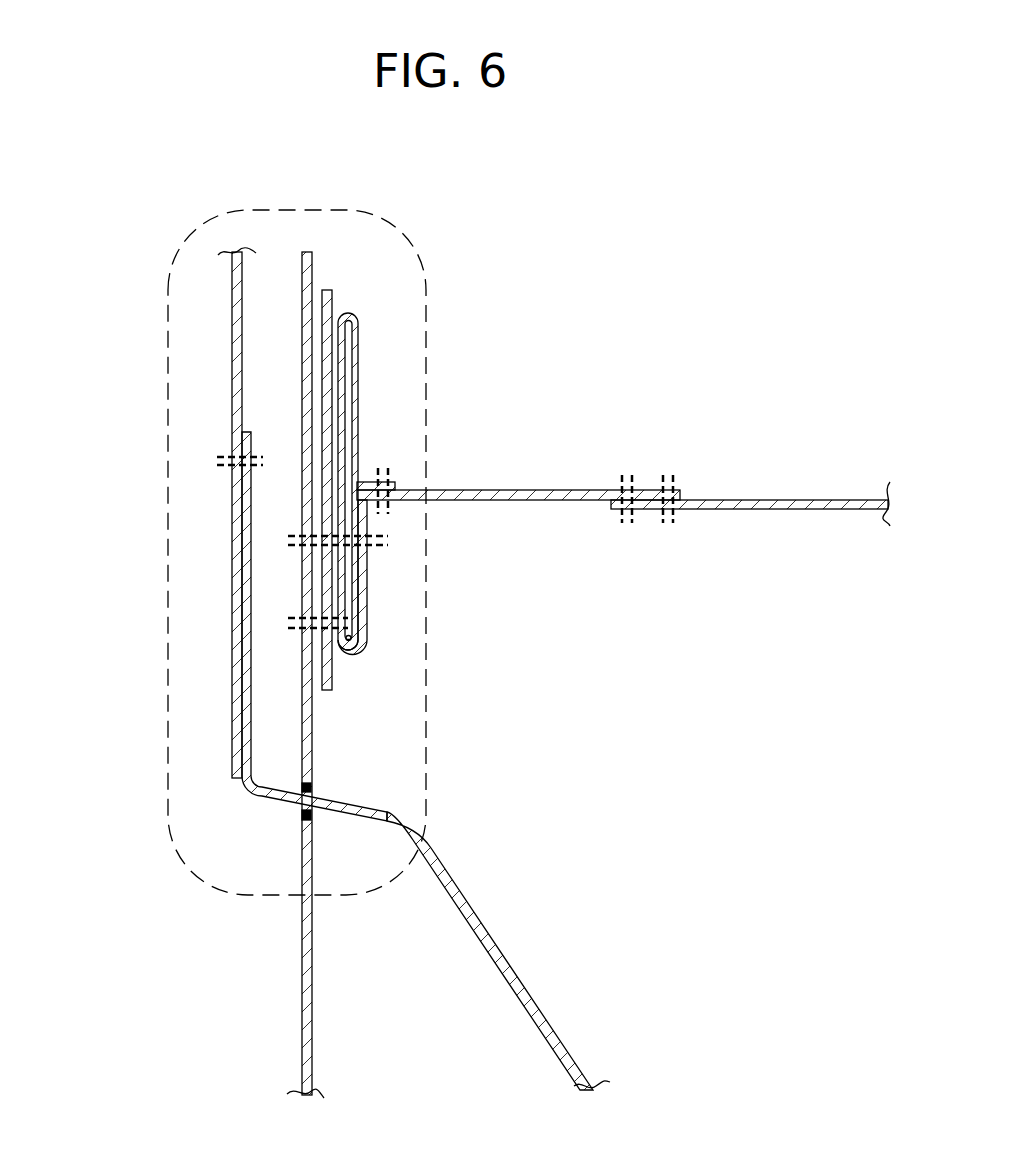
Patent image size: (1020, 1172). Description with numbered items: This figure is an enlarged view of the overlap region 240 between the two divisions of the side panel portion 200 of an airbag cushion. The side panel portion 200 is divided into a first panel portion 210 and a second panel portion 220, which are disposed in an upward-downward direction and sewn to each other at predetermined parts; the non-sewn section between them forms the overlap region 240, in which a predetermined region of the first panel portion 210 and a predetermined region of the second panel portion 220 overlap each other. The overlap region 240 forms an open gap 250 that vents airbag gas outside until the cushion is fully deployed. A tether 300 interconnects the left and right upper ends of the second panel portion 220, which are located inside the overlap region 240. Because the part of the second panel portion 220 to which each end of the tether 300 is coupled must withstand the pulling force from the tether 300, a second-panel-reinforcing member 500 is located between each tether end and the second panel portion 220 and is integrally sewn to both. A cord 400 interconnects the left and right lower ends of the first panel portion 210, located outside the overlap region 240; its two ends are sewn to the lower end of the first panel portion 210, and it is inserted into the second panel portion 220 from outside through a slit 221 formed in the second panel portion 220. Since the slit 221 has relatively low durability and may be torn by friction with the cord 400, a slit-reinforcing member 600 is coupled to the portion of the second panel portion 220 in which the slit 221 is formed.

The side panel portion 200 is at (224, 357).
The first panel portion 210 is at (232, 303).
The second panel portion 220 is at (302, 1020).
The slit 221 is at (312, 796).
The overlap region 240 is at (168, 455).
The open gap 250 is at (270, 708).
The tether 300 is at (562, 490).
The cord 400 is at (525, 998).
The second-panel-reinforcing member 500 is at (332, 292).
The slit-reinforcing member 600 is at (302, 816).